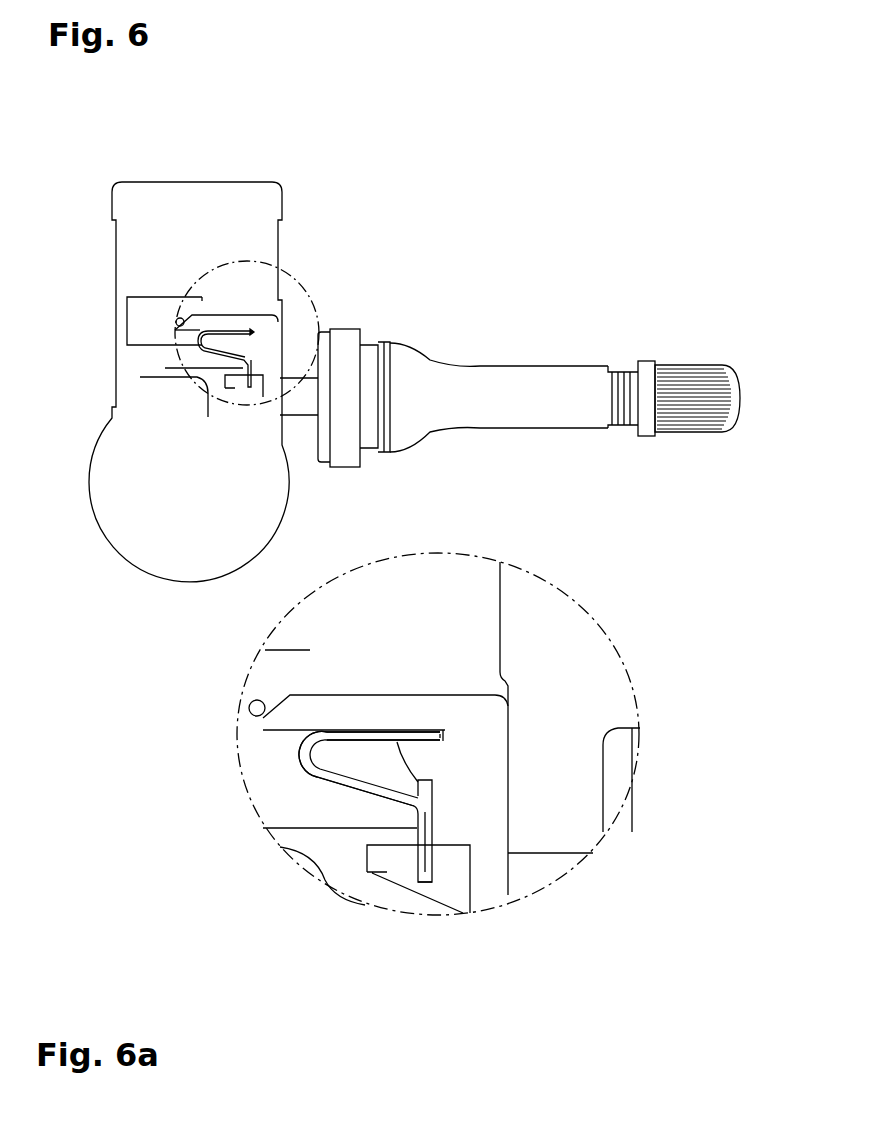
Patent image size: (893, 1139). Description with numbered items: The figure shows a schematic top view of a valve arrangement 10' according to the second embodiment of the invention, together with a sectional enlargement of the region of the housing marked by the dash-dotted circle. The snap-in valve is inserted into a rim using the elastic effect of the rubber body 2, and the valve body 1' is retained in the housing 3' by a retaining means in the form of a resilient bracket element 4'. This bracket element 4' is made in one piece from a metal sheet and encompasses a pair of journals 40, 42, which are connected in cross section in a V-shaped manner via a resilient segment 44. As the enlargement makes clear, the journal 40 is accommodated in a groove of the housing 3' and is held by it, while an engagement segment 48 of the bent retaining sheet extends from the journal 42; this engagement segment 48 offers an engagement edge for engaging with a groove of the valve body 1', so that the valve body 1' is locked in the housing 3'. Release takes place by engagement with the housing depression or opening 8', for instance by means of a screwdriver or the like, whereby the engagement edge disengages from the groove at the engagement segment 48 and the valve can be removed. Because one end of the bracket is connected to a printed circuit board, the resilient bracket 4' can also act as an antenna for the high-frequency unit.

In FIG. 6, the valve arrangement 10' is at (414, 340).
In FIG. 6, the housing 3' is at (204, 340).
In FIG. 6A, the housing 3' is at (438, 711).
In FIG. 6, the resilient bracket element 4' is at (233, 299).
In FIG. 6A, the resilient bracket element 4' is at (381, 761).
In FIG. 6, the housing depression or opening 8' is at (282, 452).
In FIG. 6A, the housing depression or opening 8' is at (443, 916).
In FIG. 6, the rubber body 2 is at (429, 356).
In FIG. 6, the valve body 1' is at (682, 359).
In FIG. 6A, the journal 40 is at (340, 730).
In FIG. 6A, the resilient segment 44 is at (302, 750).
In FIG. 6A, the journal 42 is at (350, 790).
In FIG. 6A, the engagement segment 48 is at (423, 852).